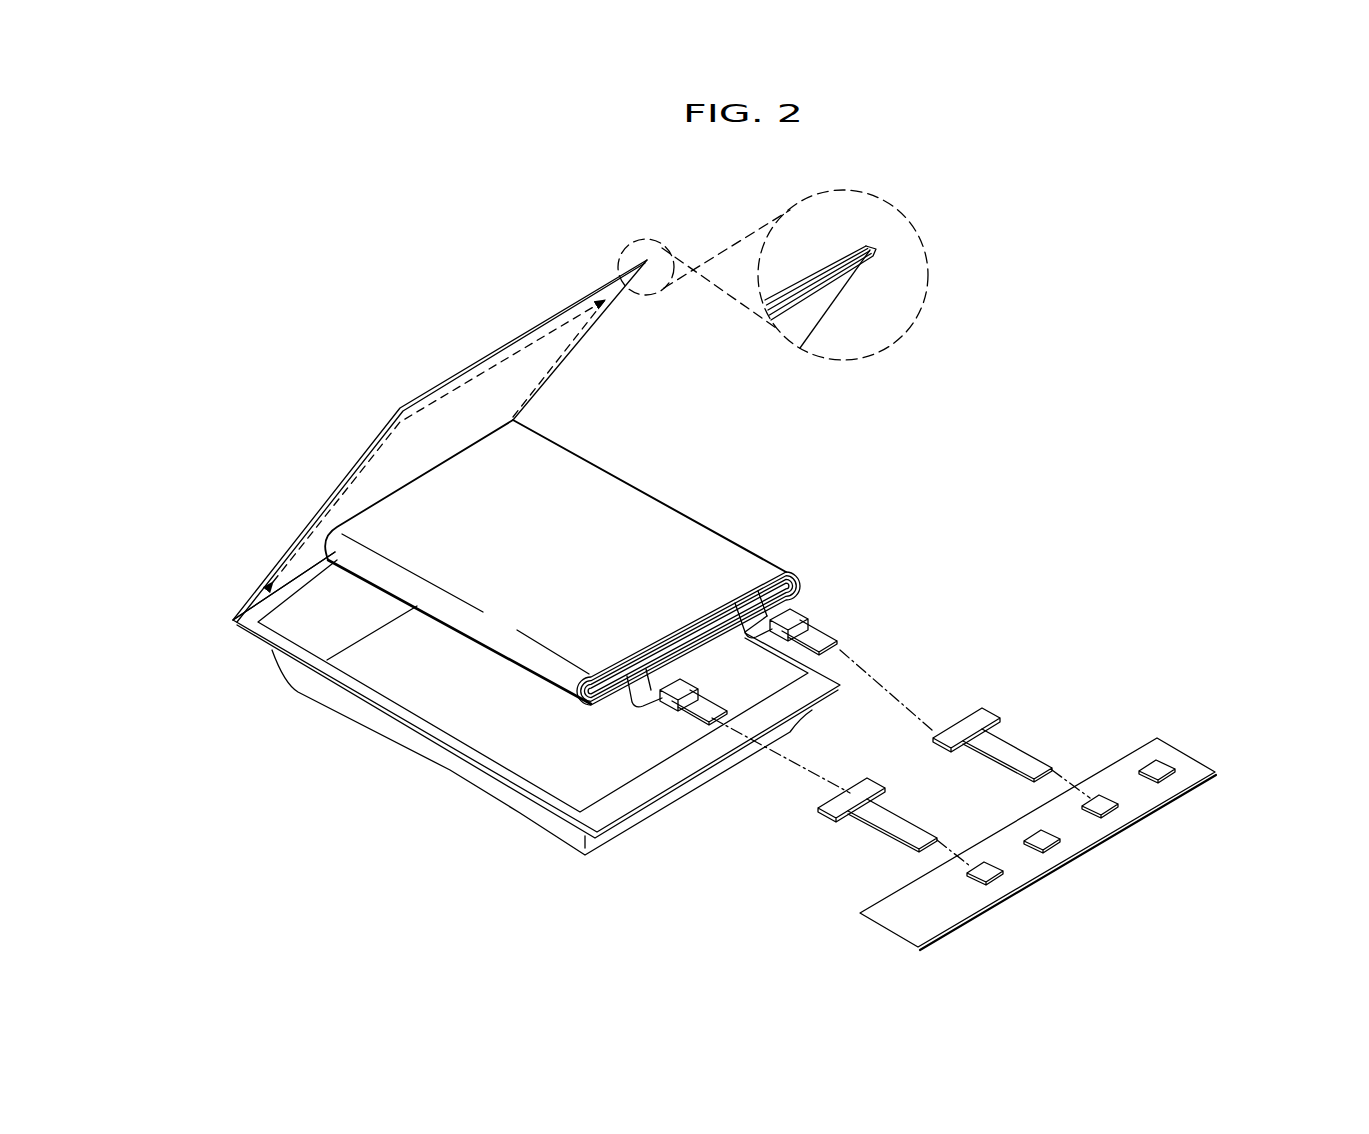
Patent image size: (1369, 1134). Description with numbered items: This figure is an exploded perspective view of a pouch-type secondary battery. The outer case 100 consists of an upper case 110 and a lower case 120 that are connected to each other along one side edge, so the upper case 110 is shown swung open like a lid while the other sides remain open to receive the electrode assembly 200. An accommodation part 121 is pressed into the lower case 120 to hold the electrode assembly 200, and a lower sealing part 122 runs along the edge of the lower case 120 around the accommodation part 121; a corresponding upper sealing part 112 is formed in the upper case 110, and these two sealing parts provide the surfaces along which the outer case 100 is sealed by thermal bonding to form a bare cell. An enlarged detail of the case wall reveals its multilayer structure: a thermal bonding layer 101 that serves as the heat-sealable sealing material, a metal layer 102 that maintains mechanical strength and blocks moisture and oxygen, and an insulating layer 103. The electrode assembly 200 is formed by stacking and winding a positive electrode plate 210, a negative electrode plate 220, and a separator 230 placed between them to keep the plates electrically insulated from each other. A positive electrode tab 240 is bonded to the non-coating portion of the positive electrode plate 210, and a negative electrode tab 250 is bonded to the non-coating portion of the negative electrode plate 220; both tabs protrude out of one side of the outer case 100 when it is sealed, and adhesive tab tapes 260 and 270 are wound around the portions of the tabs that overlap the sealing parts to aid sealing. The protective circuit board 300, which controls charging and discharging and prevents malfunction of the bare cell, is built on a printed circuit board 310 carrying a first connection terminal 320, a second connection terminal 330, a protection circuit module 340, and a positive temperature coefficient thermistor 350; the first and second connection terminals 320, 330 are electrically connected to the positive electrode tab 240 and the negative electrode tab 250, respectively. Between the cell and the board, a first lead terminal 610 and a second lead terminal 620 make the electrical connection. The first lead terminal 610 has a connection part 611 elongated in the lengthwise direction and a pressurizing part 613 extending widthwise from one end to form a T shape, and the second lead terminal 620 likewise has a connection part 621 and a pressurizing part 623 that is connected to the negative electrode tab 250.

The outer case 100 is at (167, 563).
The thermal bonding layer 101 is at (870, 250).
The metal layer 102 is at (874, 243).
The insulating layer 103 is at (876, 242).
The upper case 110 is at (405, 441).
The upper sealing part 112 is at (320, 518).
The lower case 120 is at (503, 736).
The accommodation part 121 is at (503, 735).
The lower sealing part 122 is at (530, 790).
The electrode assembly 200 is at (629, 452).
The positive electrode plate 210 is at (784, 582).
The negative electrode plate 220 is at (805, 590).
The separator 230 is at (800, 586).
The positive electrode tab 240 is at (676, 695).
The negative electrode tab 250 is at (825, 647).
The adhesive tab tape 260 is at (662, 701).
The adhesive tab tape 270 is at (806, 614).
The protective circuit board 300 is at (1090, 809).
The printed circuit board 310 is at (1202, 773).
The first connection terminal 320 is at (988, 869).
The second connection terminal 330 is at (1105, 808).
The protection circuit module 340 is at (1050, 846).
The positive temperature coefficient (PTC) thermistor 350 is at (1170, 775).
The first lead terminal 610 is at (858, 837).
The connection part 611 is at (872, 816).
The pressurizing part 613 is at (880, 784).
The second lead terminal 620 is at (993, 715).
The connection part 621 is at (1003, 741).
The pressurizing part 623 is at (983, 708).